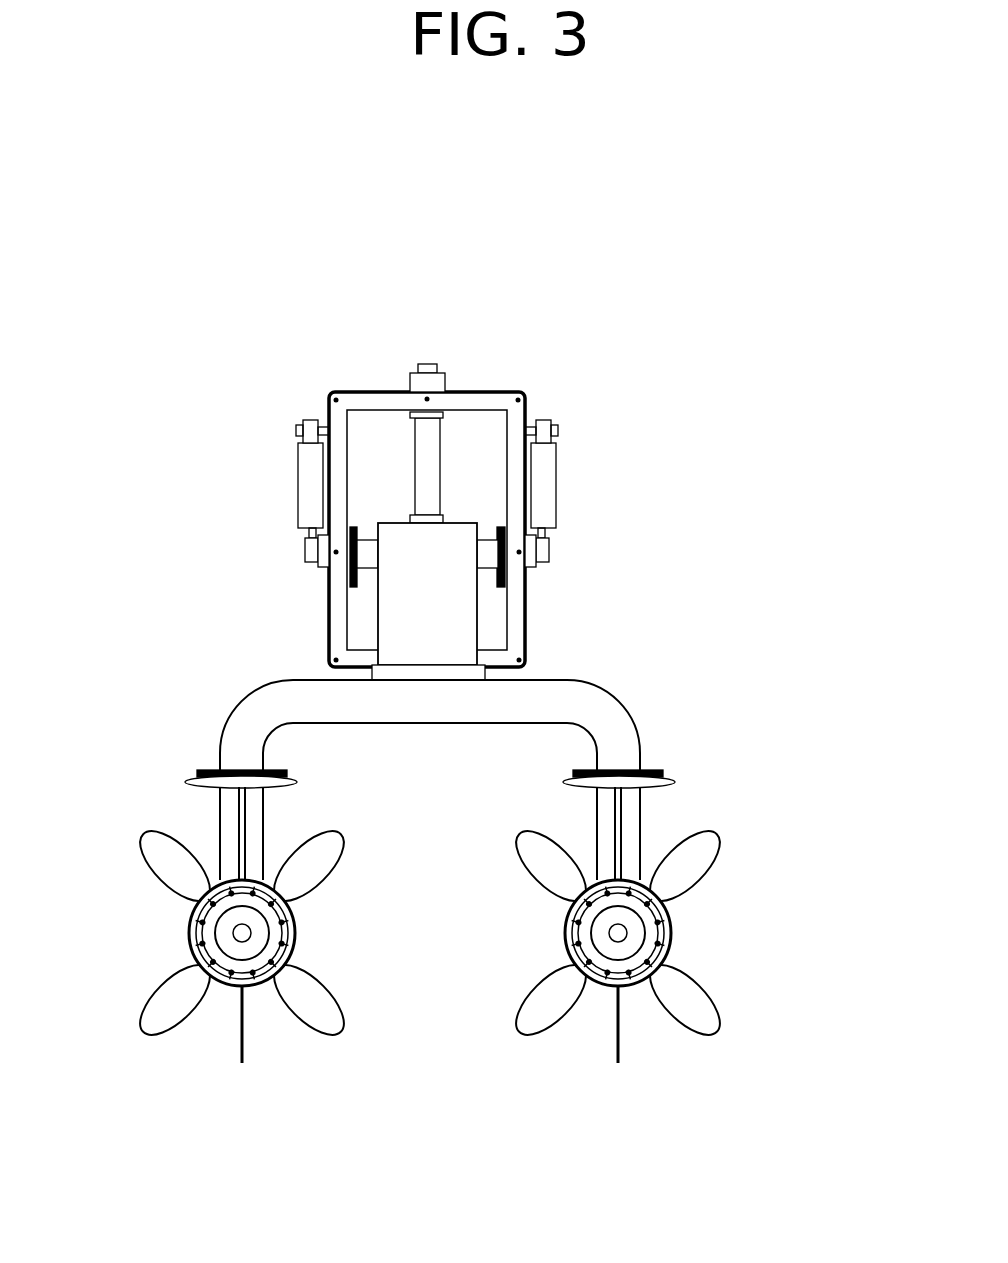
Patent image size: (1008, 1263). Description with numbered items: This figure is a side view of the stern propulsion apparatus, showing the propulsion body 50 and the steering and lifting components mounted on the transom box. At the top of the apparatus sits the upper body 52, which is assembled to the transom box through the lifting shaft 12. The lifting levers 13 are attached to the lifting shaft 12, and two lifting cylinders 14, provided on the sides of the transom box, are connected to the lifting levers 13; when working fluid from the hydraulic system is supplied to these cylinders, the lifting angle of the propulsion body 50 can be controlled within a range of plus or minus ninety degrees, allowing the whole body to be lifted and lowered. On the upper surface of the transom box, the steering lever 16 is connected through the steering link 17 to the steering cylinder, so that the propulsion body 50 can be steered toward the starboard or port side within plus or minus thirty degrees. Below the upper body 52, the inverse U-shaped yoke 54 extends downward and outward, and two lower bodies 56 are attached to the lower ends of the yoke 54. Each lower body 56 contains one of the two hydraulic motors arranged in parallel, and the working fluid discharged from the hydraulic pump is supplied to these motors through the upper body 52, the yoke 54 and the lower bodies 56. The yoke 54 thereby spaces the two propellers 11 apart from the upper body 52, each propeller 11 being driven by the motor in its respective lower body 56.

The propeller 11 is at (198, 927).
The lifting shaft 12 is at (370, 540).
The lifting lever 13 is at (313, 567).
The lifting cylinder 14 is at (298, 485).
The steering lever 16 is at (428, 373).
The steering link 17 is at (442, 462).
The propulsion body 50 is at (495, 755).
The upper body 52 is at (468, 630).
The yoke 54 is at (618, 738).
The lower body 56 is at (222, 827).